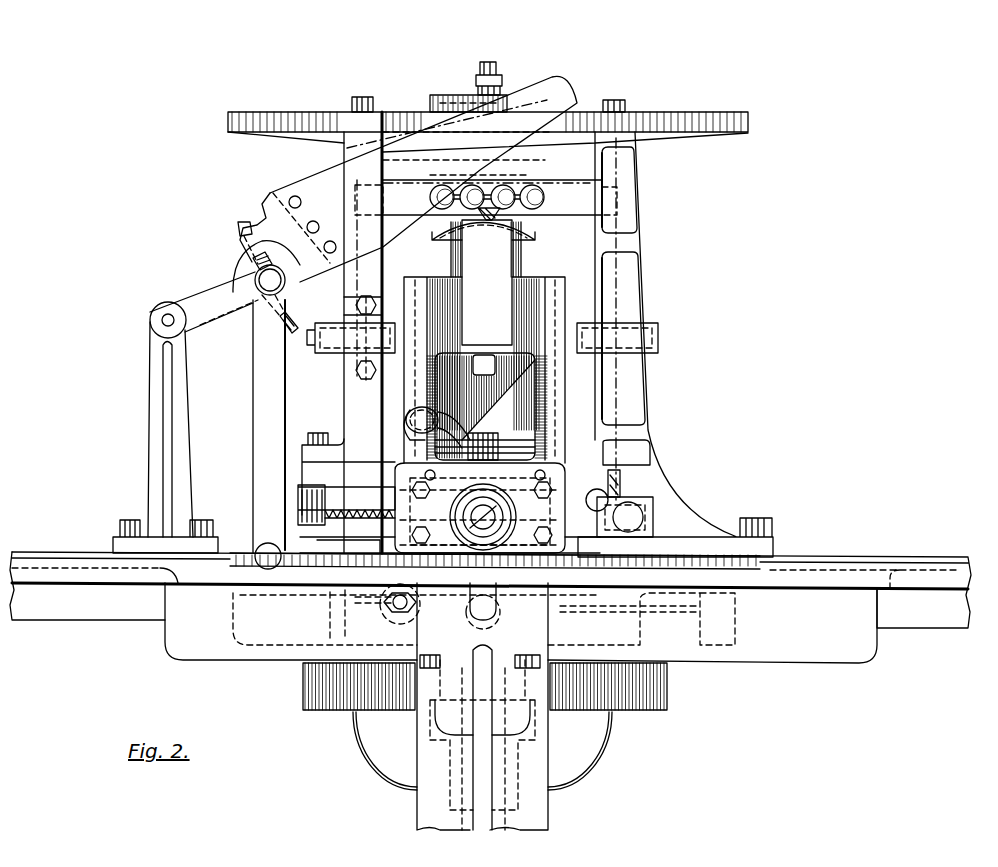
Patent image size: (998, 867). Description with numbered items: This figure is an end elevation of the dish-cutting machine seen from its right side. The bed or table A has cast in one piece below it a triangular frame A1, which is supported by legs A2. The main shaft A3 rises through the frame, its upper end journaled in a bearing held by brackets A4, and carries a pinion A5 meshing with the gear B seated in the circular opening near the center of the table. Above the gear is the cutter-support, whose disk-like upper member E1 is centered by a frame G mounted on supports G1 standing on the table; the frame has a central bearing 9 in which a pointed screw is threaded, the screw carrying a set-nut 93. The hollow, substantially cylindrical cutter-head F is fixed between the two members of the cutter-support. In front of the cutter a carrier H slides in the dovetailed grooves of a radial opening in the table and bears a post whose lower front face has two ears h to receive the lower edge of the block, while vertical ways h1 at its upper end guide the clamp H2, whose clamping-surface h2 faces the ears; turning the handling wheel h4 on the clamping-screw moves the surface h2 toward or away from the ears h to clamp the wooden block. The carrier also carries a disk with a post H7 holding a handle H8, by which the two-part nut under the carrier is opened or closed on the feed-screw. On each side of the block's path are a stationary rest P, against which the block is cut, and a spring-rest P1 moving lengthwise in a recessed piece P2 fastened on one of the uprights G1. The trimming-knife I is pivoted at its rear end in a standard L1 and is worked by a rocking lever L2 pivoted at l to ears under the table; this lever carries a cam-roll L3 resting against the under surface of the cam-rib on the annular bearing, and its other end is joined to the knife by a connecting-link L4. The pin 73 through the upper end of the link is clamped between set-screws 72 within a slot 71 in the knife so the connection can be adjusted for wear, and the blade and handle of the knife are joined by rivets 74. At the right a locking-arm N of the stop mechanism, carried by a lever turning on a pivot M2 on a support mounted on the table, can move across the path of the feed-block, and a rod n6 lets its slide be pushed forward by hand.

The bed or table A is at (490, 590).
The triangular frame A1 is at (521, 623).
The legs A2 is at (556, 793).
The main shaft A3 is at (468, 765).
The brackets A4 is at (605, 735).
The pinion A5 is at (448, 690).
The gear B is at (496, 686).
The frame G is at (684, 114).
The supports (uprights) G1 is at (340, 152).
The bearing 9 is at (433, 100).
The set-nut 93 is at (478, 88).
The trimming-knife I is at (430, 179).
The rivets 74 is at (296, 202).
The set-screws 72 is at (245, 222).
The pin 73 is at (273, 278).
The slot 71 is at (252, 266).
The member of the cutter-support E1 is at (486, 197).
The handling wheel h4 is at (430, 198).
The clamping-surface h2 is at (462, 221).
The cutter-head F is at (492, 237).
The clamp H2 is at (486, 282).
The vertical ways h1 is at (484, 370).
The stationary rest P is at (600, 373).
The spring-rest P1 is at (360, 362).
The recessed piece P2 is at (345, 354).
The ears h is at (420, 440).
The carrier H is at (508, 470).
The post H7 is at (486, 428).
The handle H8 is at (412, 412).
The locking-arm N is at (655, 515).
The rod n6 is at (604, 496).
The pivot M2 is at (380, 502).
The standard L1 is at (188, 418).
The rocking lever L2 is at (362, 598).
The pivot l is at (392, 608).
The cam-roll L3 is at (497, 616).
The connecting-link L4 is at (199, 434).